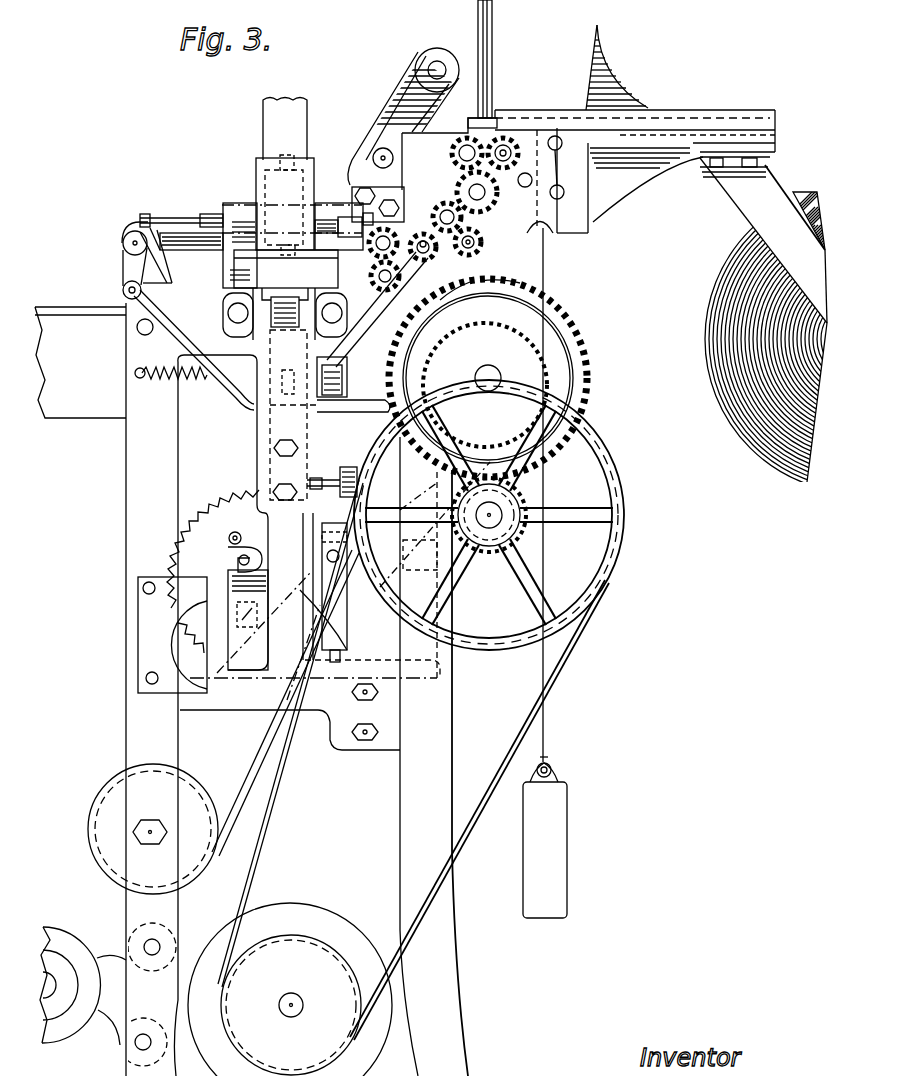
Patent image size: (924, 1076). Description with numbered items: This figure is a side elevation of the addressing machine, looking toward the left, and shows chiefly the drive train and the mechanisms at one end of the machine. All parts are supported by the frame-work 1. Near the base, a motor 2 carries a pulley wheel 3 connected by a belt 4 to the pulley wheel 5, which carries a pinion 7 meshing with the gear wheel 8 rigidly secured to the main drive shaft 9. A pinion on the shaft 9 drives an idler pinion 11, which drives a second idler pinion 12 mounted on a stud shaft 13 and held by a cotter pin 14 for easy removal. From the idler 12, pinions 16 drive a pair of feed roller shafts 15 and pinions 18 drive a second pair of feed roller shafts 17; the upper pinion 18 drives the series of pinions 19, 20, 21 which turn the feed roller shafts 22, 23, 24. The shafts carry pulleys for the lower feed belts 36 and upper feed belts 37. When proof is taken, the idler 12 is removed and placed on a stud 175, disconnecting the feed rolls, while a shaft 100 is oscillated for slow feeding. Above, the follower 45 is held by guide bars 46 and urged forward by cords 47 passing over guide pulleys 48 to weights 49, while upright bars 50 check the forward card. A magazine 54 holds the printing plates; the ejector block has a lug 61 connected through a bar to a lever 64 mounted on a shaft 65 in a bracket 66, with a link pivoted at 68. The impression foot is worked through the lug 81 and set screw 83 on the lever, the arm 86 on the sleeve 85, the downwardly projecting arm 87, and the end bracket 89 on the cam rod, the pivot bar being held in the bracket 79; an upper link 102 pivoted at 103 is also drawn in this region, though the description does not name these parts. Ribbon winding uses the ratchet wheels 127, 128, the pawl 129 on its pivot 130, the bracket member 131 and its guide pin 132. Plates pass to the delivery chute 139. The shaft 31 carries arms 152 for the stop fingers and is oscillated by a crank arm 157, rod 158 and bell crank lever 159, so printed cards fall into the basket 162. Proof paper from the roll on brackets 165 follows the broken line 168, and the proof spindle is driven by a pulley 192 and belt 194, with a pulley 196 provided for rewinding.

The frame-work 1 is at (448, 755).
The motor 2 is at (338, 922).
The pulley wheel 3 is at (296, 935).
The belt 4 is at (572, 660).
The pulley wheel 5 is at (625, 497).
The pinion 7 is at (522, 500).
The gear wheel 8 is at (594, 360).
The main drive shaft 9 is at (494, 372).
The idler pinion 11 is at (500, 280).
The idler pinion 12 is at (438, 215).
The stud shaft 13 is at (412, 262).
The cotter pin 14 is at (462, 283).
The feed roller shafts 15 is at (378, 292).
The pinions 16 is at (376, 256).
The feed roller shafts 17 is at (483, 245).
The pinions 18 is at (483, 238).
The pinion 19 is at (532, 182).
The pinion 20 is at (452, 152).
The pinion 21 is at (507, 146).
The feed roller shaft 22 is at (488, 190).
The feed roller shaft 23 is at (467, 138).
The feed roller shaft 24 is at (512, 150).
The shaft 31 is at (130, 244).
The lower feed belts 36 is at (168, 287).
The upper feed belts 37 is at (153, 228).
The follower 45 is at (612, 72).
The guide bars 46 is at (704, 116).
The cords 47 is at (547, 270).
The guide pulleys 48 is at (560, 140).
The weights 49 is at (552, 845).
The upright bars 50 is at (490, 30).
The magazine 54 is at (258, 165).
The lug 61 is at (285, 300).
The lever 64 is at (250, 330).
The shaft 65 is at (320, 488).
The bracket 66 is at (260, 445).
The pivot 68 is at (245, 390).
The bracket 79 is at (200, 262).
The lug 81 is at (262, 180).
The set screw 83 is at (292, 158).
The sleeve 85 is at (333, 225).
The arm 86 is at (268, 200).
The arm 87 is at (340, 342).
The end bracket 89 is at (345, 372).
The shaft 100 is at (383, 166).
The link 102 is at (400, 95).
The pivot 103 is at (425, 72).
The ratchet wheel 127 is at (370, 598).
The ratchet wheel 128 is at (228, 495).
The pawl 129 is at (232, 668).
The pivot 130 is at (332, 556).
The bracket member 131 is at (345, 638).
The guide pin 132 is at (332, 665).
The delivery chute 139 is at (348, 498).
The arms 152 is at (178, 228).
The crank arm 157 is at (128, 272).
The rod 158 is at (190, 345).
The bell crank lever 159 is at (352, 442).
The basket 162 is at (58, 385).
The brackets 165 is at (785, 208).
The broken line 168 is at (743, 255).
The stud 175 is at (620, 200).
The pulley 192 is at (102, 820).
The belt 194 is at (258, 768).
The pulley 196 is at (80, 917).